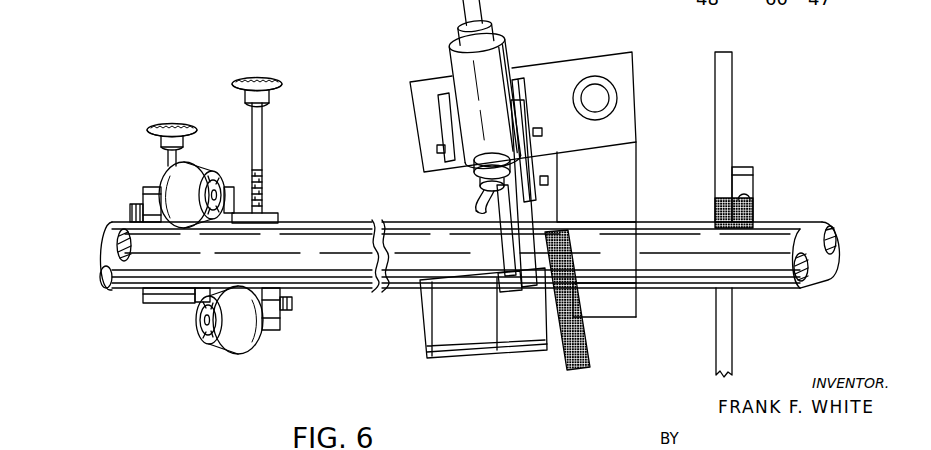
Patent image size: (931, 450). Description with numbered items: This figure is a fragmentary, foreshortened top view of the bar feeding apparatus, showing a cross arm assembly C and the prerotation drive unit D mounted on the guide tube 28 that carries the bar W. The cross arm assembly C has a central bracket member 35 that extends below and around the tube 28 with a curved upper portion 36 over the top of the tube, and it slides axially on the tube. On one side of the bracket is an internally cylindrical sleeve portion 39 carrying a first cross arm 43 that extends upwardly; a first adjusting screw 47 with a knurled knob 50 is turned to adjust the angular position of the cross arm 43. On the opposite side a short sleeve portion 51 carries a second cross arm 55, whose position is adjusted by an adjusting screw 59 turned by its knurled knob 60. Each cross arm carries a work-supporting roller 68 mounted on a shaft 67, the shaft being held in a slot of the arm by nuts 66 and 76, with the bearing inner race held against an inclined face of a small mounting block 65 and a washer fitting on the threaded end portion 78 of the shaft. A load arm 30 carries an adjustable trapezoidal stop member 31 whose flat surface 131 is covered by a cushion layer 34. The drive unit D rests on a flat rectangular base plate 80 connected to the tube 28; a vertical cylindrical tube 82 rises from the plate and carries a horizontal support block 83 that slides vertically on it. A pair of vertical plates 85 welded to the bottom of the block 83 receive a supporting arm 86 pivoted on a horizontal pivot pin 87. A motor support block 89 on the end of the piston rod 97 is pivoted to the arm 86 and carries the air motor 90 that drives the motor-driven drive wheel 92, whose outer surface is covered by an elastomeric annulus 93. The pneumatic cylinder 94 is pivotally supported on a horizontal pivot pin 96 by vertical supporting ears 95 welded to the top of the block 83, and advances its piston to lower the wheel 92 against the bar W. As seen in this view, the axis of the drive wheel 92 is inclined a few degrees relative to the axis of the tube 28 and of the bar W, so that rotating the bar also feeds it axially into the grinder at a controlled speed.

The guide tube 28 is at (113, 292).
The load arm 30 is at (727, 90).
The stop member 31 is at (742, 178).
The flat surface 131 is at (748, 198).
The cushion layer 34 is at (753, 204).
The central bracket member 35 is at (236, 193).
The curved upper portion 36 is at (200, 310).
The sleeve portion 39 is at (278, 213).
The first cross arm 43 is at (281, 309).
The first adjusting screw 47 is at (261, 128).
The knurled knob 50 is at (258, 77).
The short sleeve portion 51 is at (155, 304).
The second cross arm 55 is at (172, 259).
The adjusting screw 59 is at (165, 160).
The knurled knob 60 is at (168, 123).
The mounting block 65 is at (272, 328).
The nut 66 is at (130, 221).
The shaft 67 is at (115, 232).
The work-supporting roller 68 is at (194, 165).
The nut 76 is at (217, 183).
The threaded end portion 78 is at (133, 213).
The base plate 80 is at (637, 178).
The vertical cylindrical tube 82 is at (612, 92).
The support block 83 is at (575, 66).
The vertical plates 85 is at (518, 157).
The supporting arm 86 is at (530, 210).
The horizontal pivot pin 87 is at (546, 180).
The motor support block 89 is at (514, 355).
The air motor 90 is at (428, 322).
The drive wheel 92 is at (572, 259).
The annulus 93 is at (580, 340).
The pneumatic cylinder 94 is at (449, 62).
The vertical supporting ears 95 is at (438, 100).
The horizontal pivot pin 96 is at (440, 148).
The piston rod 97 is at (499, 243).
The cross arm assembly C is at (190, 80).
The prerotation drive unit D is at (505, 34).
The bar W is at (334, 222).